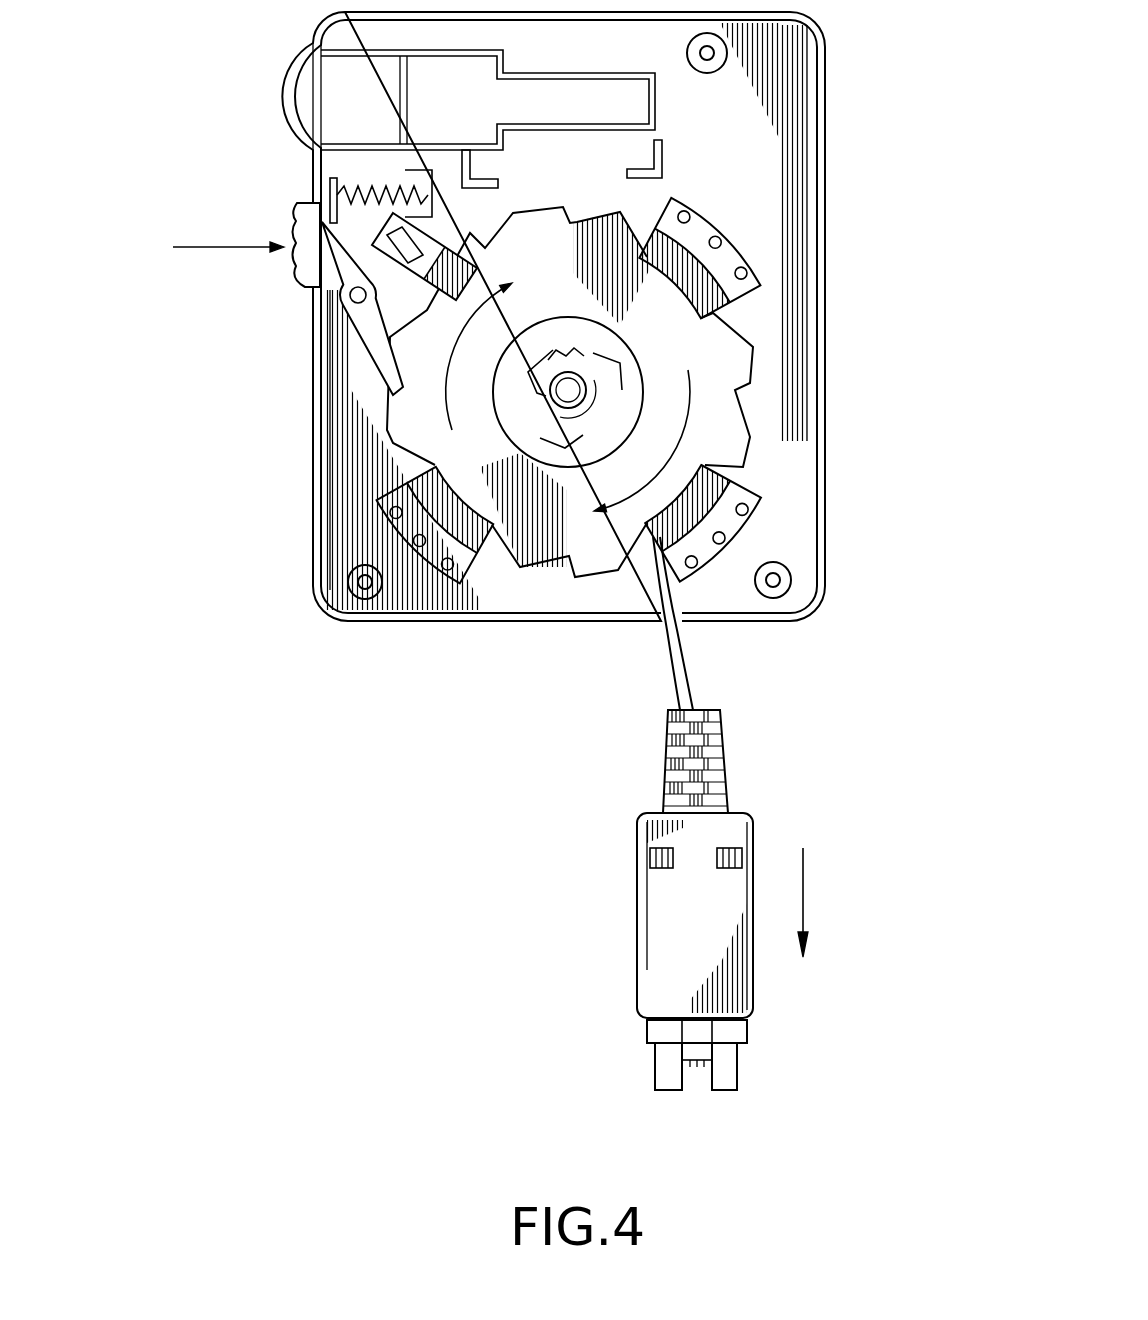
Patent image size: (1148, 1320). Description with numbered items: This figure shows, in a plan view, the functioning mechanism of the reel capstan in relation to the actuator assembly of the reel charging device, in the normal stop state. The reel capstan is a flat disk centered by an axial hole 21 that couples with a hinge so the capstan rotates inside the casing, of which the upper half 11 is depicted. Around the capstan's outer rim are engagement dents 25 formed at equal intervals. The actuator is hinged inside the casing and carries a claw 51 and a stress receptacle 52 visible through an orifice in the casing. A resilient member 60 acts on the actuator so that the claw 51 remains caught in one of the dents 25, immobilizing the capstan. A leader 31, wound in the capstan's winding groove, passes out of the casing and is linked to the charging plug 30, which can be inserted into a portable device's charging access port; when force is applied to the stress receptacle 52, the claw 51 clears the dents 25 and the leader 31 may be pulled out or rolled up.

The upper half 11 is at (823, 167).
The axial hole 21 is at (572, 388).
The engagement dents 25 is at (383, 393).
The charging plug 30 is at (678, 890).
The leader 31 is at (680, 660).
The claw 51 is at (375, 357).
The stress receptacle 52 is at (313, 222).
The resilient member 60 is at (333, 168).